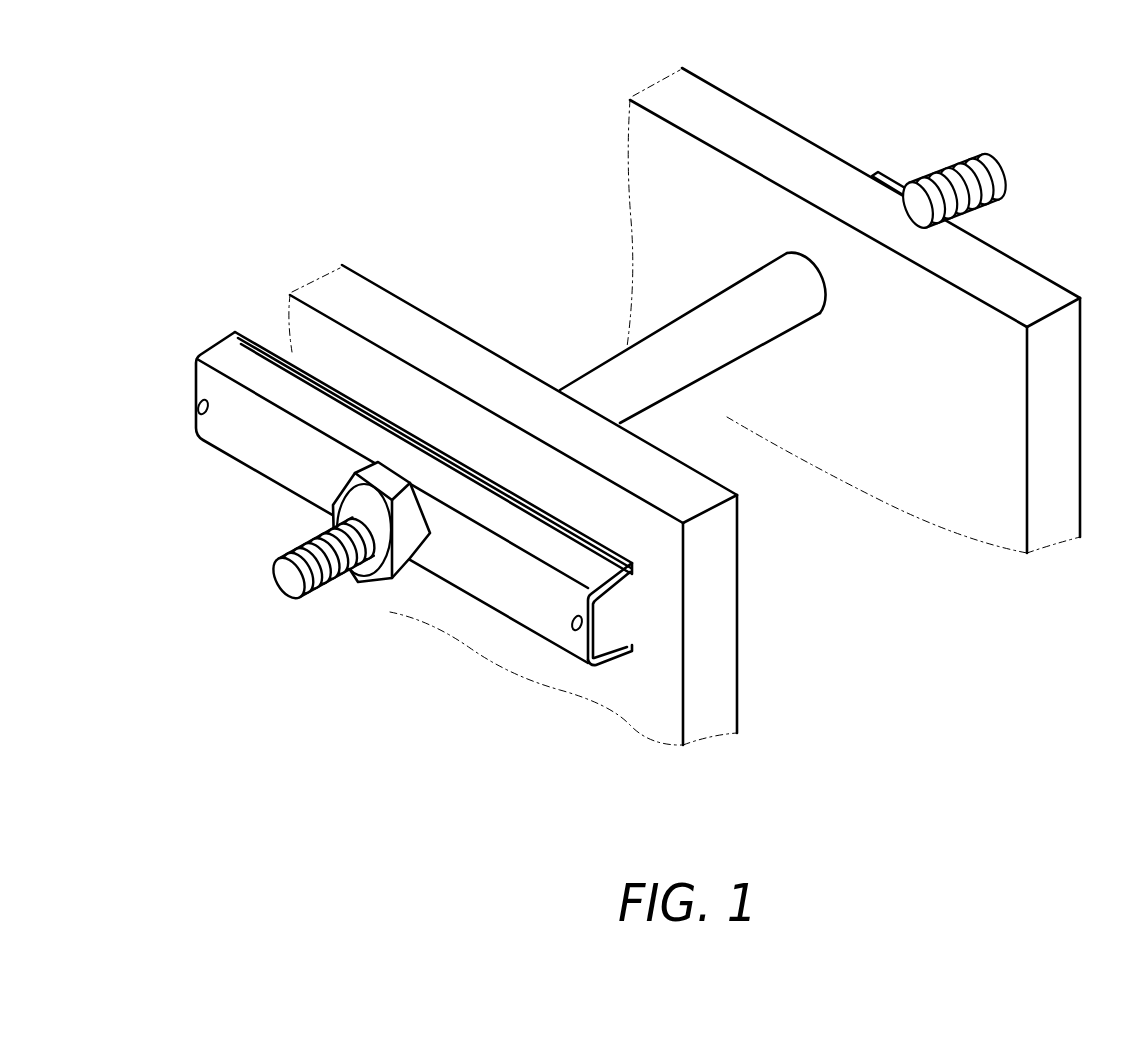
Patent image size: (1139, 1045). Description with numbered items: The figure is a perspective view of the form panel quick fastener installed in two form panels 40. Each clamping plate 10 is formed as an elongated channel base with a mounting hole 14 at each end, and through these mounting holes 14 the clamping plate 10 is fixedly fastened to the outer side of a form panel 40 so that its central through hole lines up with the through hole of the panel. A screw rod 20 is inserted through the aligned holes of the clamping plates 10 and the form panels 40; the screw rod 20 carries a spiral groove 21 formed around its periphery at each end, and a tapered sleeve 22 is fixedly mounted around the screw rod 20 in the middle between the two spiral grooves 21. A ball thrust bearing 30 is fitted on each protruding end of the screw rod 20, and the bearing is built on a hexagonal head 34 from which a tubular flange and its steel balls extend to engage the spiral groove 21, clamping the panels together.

The clamping plate 10 is at (543, 384).
The mounting hole 14 is at (353, 498).
The screw rod 20 is at (281, 539).
The spiral groove 21 is at (296, 540).
The tapered sleeve 22 is at (607, 353).
The ball thrust bearing 30 is at (601, 384).
The hexagonal head 34 is at (373, 582).
The form panel 40 is at (458, 347).